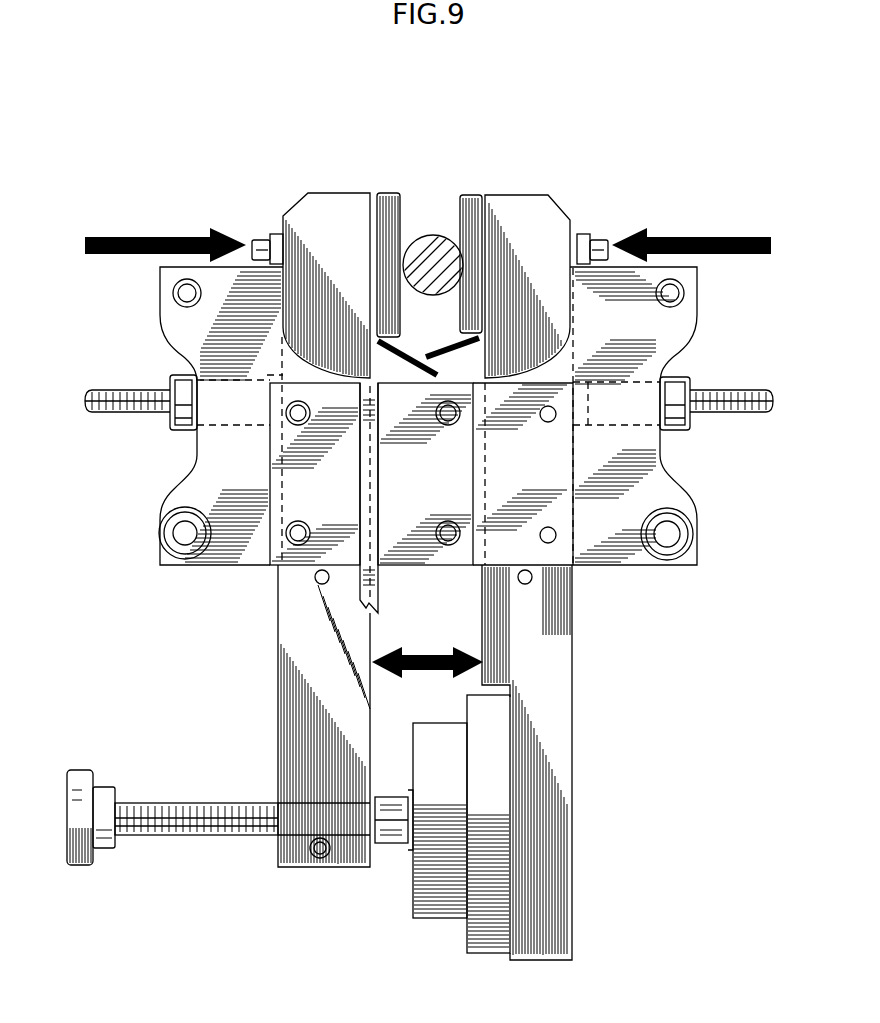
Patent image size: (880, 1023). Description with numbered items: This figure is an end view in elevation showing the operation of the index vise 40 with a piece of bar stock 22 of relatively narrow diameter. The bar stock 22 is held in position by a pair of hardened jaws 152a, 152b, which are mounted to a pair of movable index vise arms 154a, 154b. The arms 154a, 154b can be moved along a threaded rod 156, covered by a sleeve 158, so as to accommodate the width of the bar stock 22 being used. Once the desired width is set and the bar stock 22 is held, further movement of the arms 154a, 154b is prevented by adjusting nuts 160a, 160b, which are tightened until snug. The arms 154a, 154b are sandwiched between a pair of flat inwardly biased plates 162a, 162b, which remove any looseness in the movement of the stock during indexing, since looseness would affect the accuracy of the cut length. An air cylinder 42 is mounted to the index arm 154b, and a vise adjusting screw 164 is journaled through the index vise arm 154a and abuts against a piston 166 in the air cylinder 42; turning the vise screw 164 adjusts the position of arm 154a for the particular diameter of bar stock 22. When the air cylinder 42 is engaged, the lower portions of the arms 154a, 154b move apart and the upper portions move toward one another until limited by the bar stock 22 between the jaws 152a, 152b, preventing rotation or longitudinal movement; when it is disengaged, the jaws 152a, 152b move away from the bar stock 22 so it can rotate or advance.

The bar stock 22 is at (432, 248).
The index vise 40 is at (419, 528).
The air cylinder 42 is at (452, 920).
The hardened jaw 152a is at (397, 195).
The hardened jaw 152b is at (485, 198).
The index vise arm 154a is at (302, 217).
The index vise arm 154b is at (552, 222).
The threaded rod 156 is at (88, 410).
The sleeve 158 is at (178, 357).
The adjusting nut 160a is at (170, 380).
The adjusting nut 160b is at (680, 390).
The flat inwardly biased plate 162a is at (208, 465).
The flat inwardly biased plate 162b is at (640, 493).
The vise adjusting screw 164 is at (170, 840).
The piston 166 is at (393, 835).